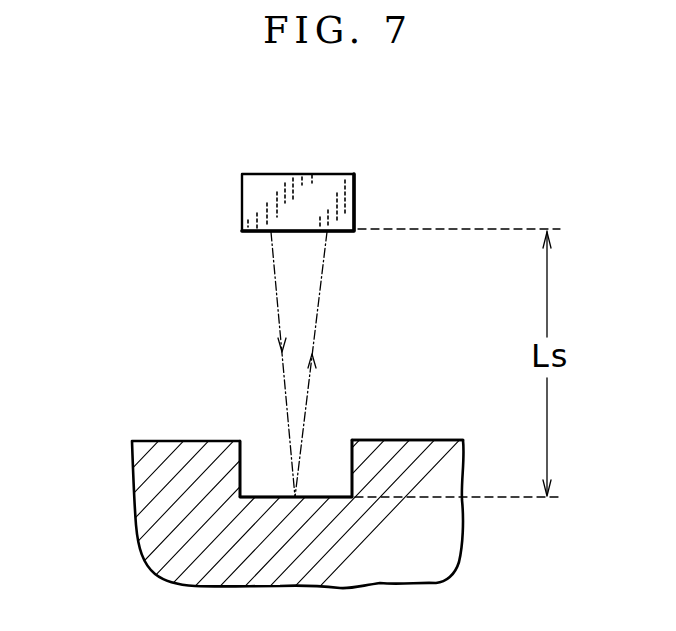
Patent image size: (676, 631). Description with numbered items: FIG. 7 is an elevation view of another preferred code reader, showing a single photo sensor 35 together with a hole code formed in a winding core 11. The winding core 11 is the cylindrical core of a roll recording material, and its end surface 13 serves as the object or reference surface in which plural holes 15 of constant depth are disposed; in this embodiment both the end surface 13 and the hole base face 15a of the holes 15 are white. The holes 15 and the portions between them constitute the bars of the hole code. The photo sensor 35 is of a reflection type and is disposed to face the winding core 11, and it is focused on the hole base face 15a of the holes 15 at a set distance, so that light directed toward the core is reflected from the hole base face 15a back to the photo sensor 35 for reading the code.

The winding core 11 is at (234, 515).
The end surface 13 is at (407, 400).
The holes 15 is at (295, 432).
The hole base face 15a is at (305, 440).
The photo sensor 35 is at (298, 297).